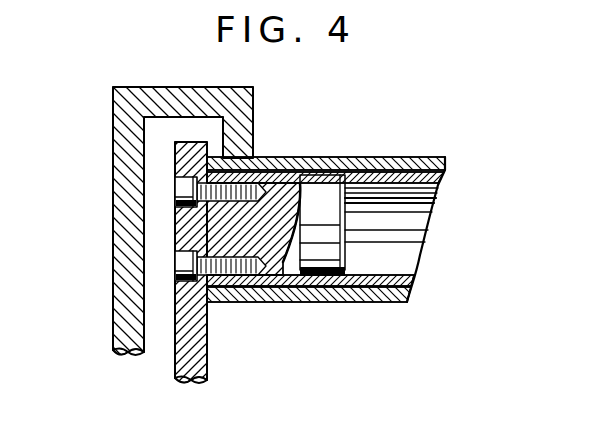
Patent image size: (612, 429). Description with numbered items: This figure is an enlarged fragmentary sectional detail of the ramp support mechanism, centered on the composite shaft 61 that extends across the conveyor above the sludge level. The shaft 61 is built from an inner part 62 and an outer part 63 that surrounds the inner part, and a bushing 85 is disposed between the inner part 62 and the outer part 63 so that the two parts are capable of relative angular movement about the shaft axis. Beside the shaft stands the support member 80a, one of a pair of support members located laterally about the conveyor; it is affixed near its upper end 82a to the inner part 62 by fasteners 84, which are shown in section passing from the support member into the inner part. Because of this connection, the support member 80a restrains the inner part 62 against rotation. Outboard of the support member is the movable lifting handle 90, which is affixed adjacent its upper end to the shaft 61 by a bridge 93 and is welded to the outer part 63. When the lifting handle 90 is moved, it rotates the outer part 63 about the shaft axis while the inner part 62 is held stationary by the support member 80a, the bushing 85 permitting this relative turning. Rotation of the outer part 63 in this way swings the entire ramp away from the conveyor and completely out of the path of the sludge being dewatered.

The shaft 61 is at (445, 172).
The inner part 62 is at (290, 157).
The outer part 63 is at (338, 172).
The support member 80a is at (208, 366).
The upper end 82a is at (192, 142).
The fasteners 84 is at (175, 262).
The bushing 85 is at (265, 296).
The lifting handle 90 is at (113, 294).
The bridge 93 is at (147, 100).